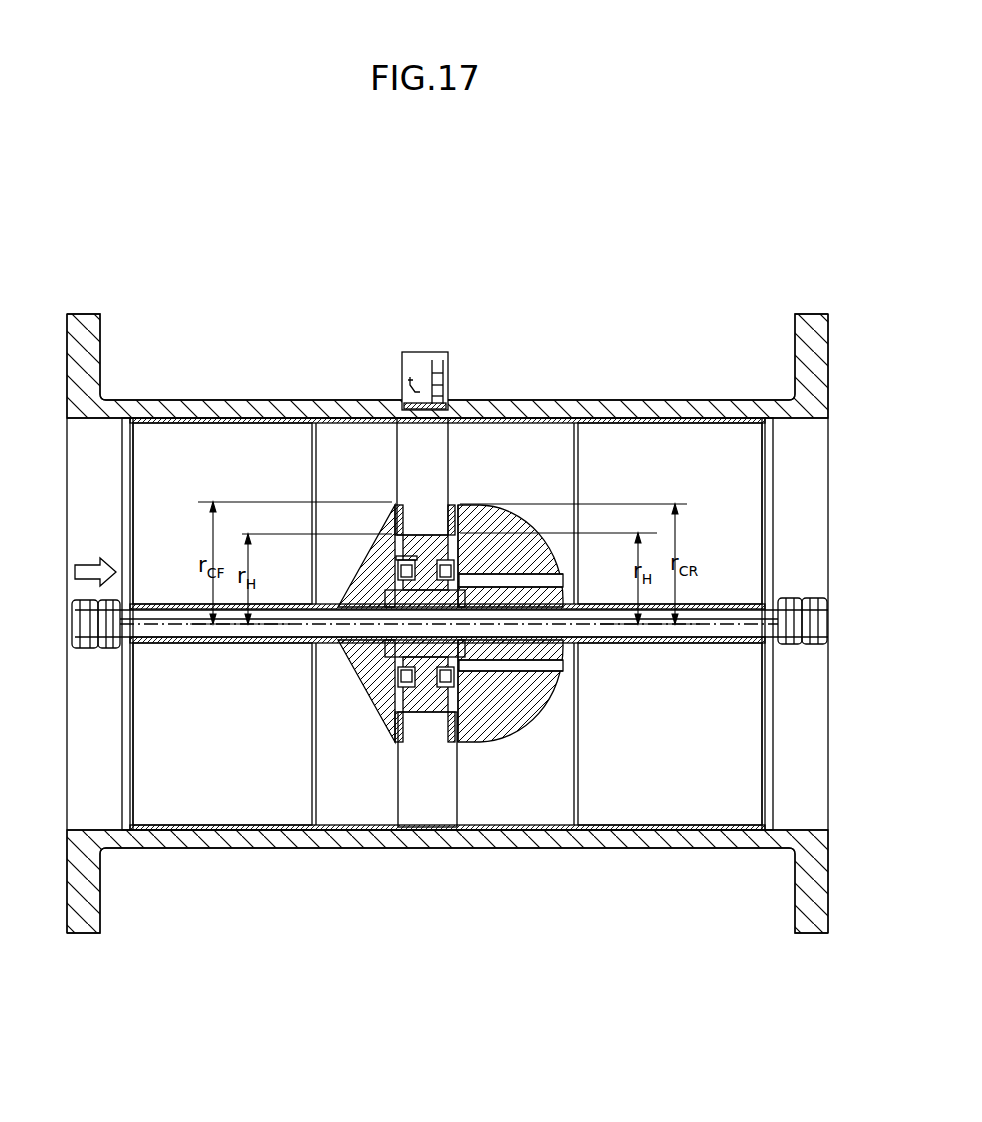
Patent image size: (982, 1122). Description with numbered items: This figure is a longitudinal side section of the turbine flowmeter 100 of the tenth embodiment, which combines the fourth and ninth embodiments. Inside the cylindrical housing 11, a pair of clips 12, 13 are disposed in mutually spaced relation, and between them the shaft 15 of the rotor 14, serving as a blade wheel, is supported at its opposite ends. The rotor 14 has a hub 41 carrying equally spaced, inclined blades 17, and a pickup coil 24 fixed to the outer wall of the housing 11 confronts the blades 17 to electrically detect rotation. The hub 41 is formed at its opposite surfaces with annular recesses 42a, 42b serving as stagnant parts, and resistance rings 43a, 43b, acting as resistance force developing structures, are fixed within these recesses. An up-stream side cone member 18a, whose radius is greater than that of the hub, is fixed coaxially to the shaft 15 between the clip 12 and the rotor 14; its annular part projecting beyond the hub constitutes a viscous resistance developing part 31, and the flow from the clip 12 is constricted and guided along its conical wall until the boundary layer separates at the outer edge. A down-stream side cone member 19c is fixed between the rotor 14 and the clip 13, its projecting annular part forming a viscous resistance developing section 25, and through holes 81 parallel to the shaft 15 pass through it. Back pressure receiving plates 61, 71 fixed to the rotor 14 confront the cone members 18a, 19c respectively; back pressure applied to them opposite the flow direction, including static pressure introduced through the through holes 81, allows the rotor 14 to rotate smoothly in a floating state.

The turbine flowmeter 100 is at (338, 377).
The cylindrical housing 11 is at (607, 400).
The clip 12 is at (126, 530).
The clip 13 is at (768, 527).
The rotor 14 is at (392, 488).
The shaft 15 is at (172, 638).
The blades 17 is at (453, 783).
The up-stream side cone member 18a is at (356, 672).
The down-stream side cone member 19c is at (540, 700).
The pickup coil 24 is at (449, 382).
The viscous resistance developing section 25 is at (455, 748).
The viscous resistance developing part 31 is at (388, 738).
The hub 41 is at (428, 535).
The annular recess 42a is at (404, 567).
The annular recess 42b is at (478, 540).
The resistance ring 43a is at (397, 578).
The resistance ring 43b is at (452, 571).
The back pressure receiving plate 61 is at (404, 737).
The back pressure receiving plate 71 is at (448, 725).
The through holes 81 is at (560, 675).